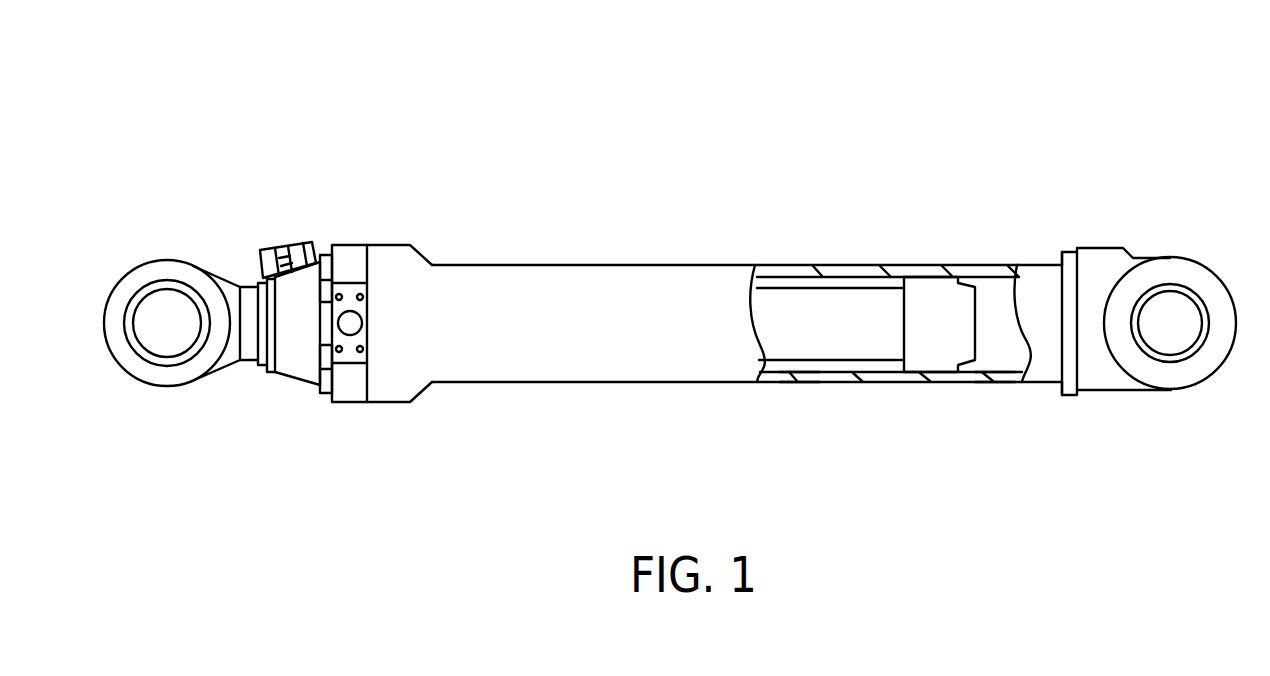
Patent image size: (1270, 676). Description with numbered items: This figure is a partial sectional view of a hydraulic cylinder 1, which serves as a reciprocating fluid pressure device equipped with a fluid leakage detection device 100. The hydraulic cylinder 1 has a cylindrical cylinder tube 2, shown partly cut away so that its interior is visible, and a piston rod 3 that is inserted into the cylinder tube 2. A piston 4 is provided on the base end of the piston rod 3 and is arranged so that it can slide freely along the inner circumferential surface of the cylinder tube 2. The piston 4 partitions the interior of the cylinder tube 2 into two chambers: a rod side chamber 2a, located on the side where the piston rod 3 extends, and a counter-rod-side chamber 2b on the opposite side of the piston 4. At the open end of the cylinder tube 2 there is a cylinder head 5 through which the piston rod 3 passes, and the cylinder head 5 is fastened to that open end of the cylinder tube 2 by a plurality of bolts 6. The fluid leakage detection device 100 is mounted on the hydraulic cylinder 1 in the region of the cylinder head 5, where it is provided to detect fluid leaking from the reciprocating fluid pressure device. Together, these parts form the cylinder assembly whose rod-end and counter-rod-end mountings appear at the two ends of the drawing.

The hydraulic cylinder 1 is at (1010, 170).
The cylinder tube 2 is at (657, 295).
The rod side chamber 2a is at (800, 372).
The counter-rod-side chamber 2b is at (994, 372).
The piston rod 3 is at (833, 323).
The piston 4 is at (933, 290).
The cylinder head 5 is at (292, 347).
The bolts 6 is at (320, 292).
The fluid leakage detection device 100 is at (273, 242).